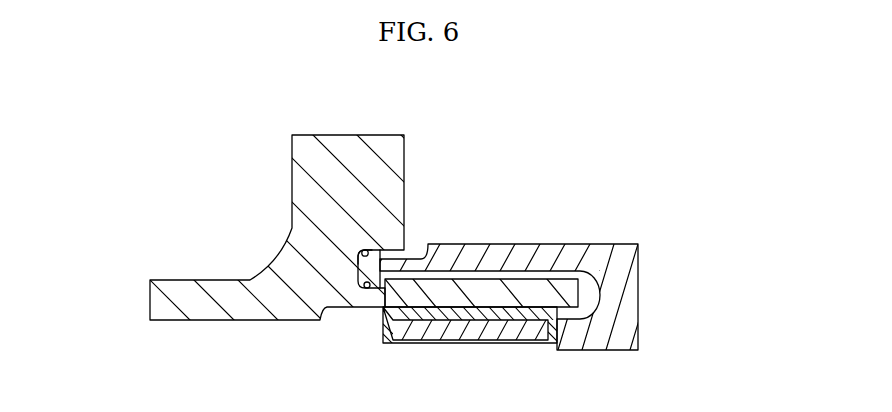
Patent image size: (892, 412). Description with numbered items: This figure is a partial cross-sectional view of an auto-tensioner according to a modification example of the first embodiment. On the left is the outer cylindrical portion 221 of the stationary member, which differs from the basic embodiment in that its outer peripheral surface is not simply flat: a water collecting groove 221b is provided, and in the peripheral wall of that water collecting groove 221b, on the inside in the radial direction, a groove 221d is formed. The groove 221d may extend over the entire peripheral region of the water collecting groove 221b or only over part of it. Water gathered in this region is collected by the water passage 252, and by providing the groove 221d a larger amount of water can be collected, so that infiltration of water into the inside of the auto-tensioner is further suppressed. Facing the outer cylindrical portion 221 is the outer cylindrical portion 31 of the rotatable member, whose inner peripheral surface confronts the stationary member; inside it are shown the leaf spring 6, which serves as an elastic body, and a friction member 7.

The outer cylindrical portion 221 is at (198, 308).
The water collecting groove 221b is at (368, 248).
The groove 221d is at (360, 289).
The water passage 252 is at (369, 271).
The outer cylindrical portion 31 is at (474, 258).
The friction member 7 is at (503, 306).
The leaf spring 6 is at (529, 306).